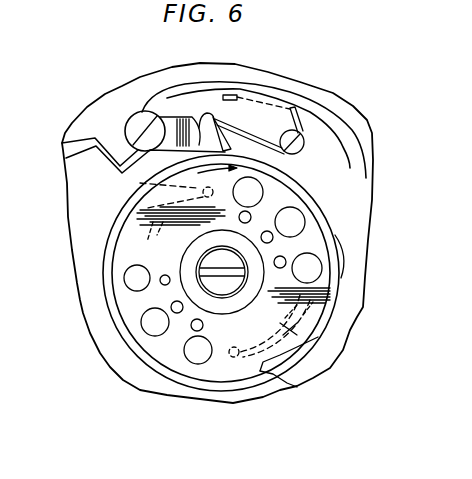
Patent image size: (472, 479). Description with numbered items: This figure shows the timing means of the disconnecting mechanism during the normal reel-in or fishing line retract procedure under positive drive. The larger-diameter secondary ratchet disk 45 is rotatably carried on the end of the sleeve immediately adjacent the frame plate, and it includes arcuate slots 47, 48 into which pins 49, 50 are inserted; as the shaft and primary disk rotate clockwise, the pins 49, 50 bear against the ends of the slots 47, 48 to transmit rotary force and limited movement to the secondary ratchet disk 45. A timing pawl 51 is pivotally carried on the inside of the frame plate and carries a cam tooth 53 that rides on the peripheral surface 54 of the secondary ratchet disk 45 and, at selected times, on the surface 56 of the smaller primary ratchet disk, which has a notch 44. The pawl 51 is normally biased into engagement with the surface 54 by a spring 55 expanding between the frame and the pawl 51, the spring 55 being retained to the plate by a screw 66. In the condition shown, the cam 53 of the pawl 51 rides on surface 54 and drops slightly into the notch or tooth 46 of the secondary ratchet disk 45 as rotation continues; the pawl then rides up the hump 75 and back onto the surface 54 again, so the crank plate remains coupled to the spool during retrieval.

The notch 44 is at (272, 362).
The secondary ratchet disk 45 is at (307, 195).
The tooth 46 is at (357, 308).
The arcuate slot 47 is at (143, 234).
The arcuate slot 48 is at (300, 338).
The pin 49 is at (233, 357).
The pin 50 is at (140, 183).
The timing pawl 51 is at (174, 117).
The cam tooth 53 is at (222, 148).
The surface 54 is at (326, 207).
The spring 55 is at (300, 120).
The surface 56 is at (333, 238).
The screw 66 is at (307, 140).
The hump 75 is at (342, 278).